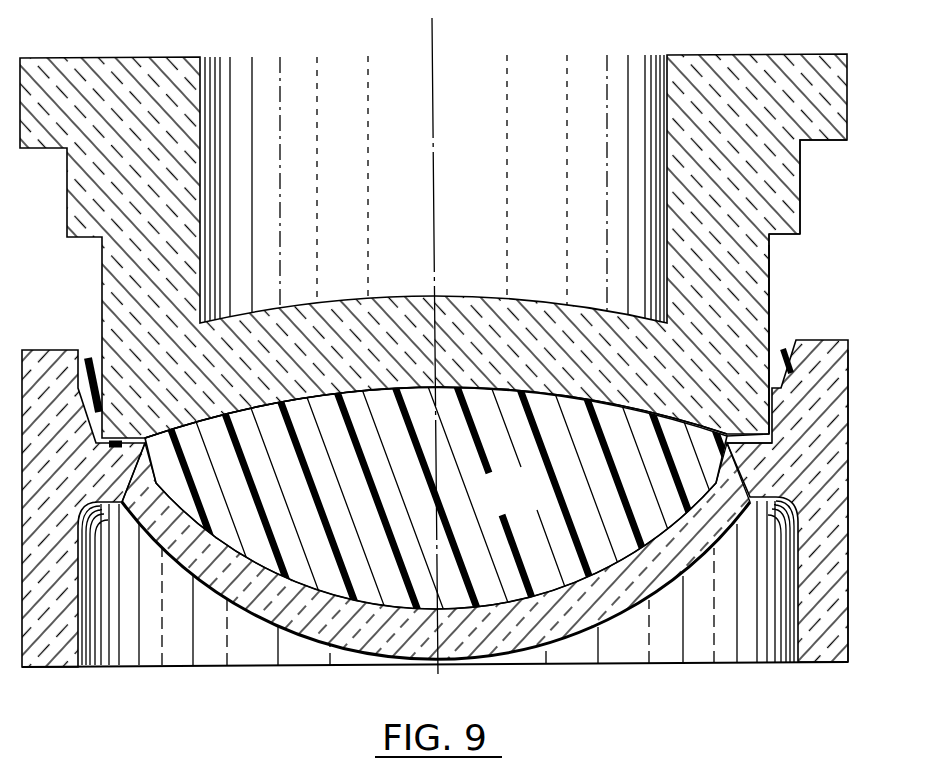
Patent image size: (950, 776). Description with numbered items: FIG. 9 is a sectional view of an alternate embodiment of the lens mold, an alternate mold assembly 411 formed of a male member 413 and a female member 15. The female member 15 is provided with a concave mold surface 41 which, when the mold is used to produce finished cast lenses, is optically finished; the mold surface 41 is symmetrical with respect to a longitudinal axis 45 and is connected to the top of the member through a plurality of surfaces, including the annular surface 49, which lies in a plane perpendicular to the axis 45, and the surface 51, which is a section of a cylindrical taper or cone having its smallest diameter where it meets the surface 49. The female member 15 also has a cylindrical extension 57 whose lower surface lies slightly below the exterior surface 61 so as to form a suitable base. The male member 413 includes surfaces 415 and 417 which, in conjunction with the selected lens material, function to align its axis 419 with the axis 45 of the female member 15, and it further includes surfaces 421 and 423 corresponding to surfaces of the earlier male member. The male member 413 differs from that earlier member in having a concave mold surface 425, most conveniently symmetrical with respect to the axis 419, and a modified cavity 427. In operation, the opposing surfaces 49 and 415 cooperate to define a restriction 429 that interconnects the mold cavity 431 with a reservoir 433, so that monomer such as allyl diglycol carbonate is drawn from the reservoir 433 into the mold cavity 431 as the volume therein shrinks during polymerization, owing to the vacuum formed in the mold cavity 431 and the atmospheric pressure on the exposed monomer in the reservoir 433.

The female member 15 is at (213, 668).
The concave mold surface 41 is at (313, 583).
The longitudinal axis 45 is at (438, 676).
The surface 49 is at (757, 449).
The surface 51 is at (776, 420).
The cylindrical extension 57 is at (824, 665).
The exterior surface 61 is at (643, 598).
The alternate mold assembly 411 is at (786, 318).
The male member 413 is at (697, 56).
The surface 415 is at (741, 430).
The surface 417 is at (771, 278).
The axis 419 is at (437, 35).
The surface 421 is at (802, 214).
The surface 423 is at (806, 150).
The concave mold surface 425 is at (379, 393).
The modified cavity 427 is at (362, 167).
The restriction 429 is at (120, 450).
The mold cavity 431 is at (527, 506).
The reservoir 433 is at (96, 350).